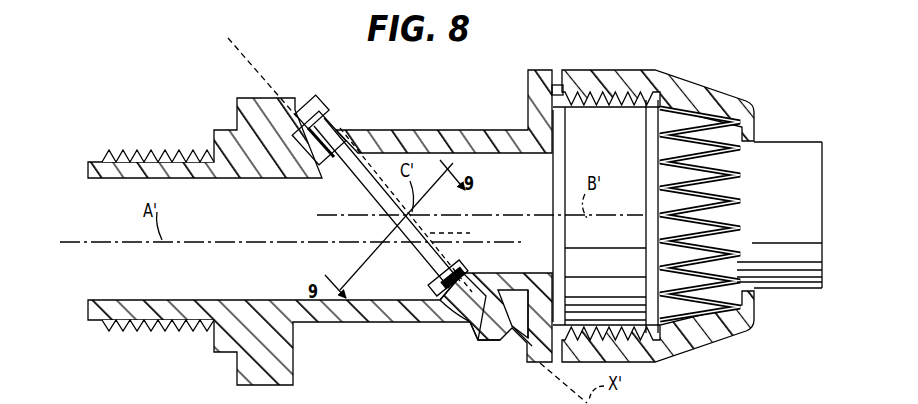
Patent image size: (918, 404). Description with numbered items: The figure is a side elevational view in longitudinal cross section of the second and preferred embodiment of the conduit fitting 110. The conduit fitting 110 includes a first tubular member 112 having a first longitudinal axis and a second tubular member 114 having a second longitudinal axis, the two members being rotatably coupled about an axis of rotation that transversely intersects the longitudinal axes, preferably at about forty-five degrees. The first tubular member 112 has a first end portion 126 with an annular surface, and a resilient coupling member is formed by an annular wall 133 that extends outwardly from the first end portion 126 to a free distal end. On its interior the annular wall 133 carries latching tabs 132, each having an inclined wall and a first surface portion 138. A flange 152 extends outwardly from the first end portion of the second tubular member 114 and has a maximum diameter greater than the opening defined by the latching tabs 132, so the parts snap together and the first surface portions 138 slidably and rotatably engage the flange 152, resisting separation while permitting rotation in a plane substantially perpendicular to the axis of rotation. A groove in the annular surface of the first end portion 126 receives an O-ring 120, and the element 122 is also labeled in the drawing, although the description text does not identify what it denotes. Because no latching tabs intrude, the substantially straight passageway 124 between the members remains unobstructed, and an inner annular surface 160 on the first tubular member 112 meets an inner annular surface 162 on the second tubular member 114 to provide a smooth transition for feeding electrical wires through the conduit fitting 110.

The conduit fitting 110 is at (82, 138).
The first tubular member 112 is at (147, 147).
The second tubular member 114 is at (444, 128).
The O-ring 120 is at (443, 325).
The valve stem 122 is at (304, 97).
The passageway 124 is at (297, 217).
The first end portion 126 is at (333, 110).
The latching tabs 132 is at (440, 233).
The annular wall 133 is at (460, 257).
The first surface portion 138 is at (370, 187).
The flange 152 is at (468, 335).
The inner annular surface 160 is at (446, 297).
The inner annular surface 162 is at (445, 272).